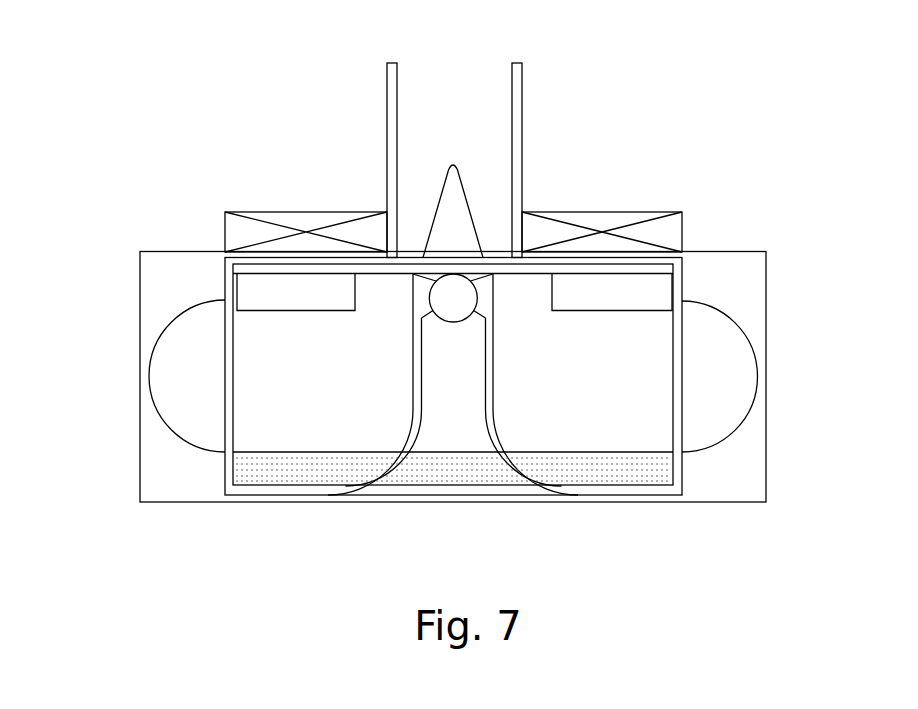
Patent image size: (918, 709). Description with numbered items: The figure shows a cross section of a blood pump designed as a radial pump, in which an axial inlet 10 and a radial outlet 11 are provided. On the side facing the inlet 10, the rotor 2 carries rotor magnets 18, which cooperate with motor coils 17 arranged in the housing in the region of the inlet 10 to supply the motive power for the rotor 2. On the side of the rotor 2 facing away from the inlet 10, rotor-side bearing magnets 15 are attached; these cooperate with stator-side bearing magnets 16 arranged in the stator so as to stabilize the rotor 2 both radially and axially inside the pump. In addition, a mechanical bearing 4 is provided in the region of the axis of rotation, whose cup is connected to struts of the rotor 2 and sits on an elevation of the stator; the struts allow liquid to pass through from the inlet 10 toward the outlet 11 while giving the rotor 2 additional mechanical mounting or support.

The rotor 2 is at (266, 417).
The mechanical bearing 4 is at (462, 264).
The axial inlet 10 is at (463, 88).
The radial outlet 11 is at (747, 378).
The rotor-side bearing magnets 15 is at (640, 462).
The stator-side bearing magnets 16 is at (443, 468).
The motor coils 17 is at (308, 209).
The rotor magnets 18 is at (453, 292).